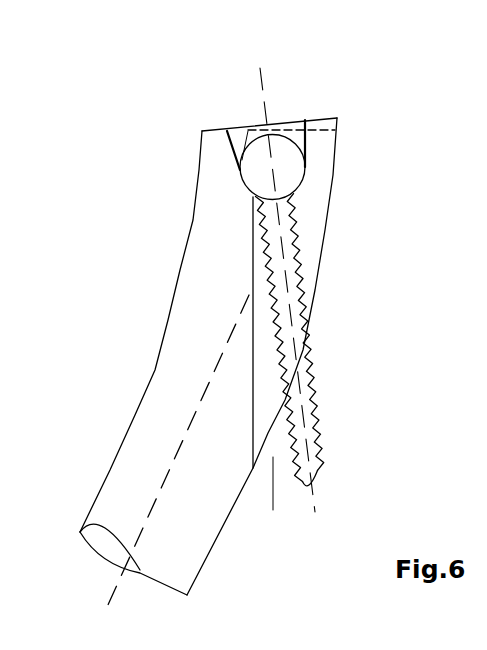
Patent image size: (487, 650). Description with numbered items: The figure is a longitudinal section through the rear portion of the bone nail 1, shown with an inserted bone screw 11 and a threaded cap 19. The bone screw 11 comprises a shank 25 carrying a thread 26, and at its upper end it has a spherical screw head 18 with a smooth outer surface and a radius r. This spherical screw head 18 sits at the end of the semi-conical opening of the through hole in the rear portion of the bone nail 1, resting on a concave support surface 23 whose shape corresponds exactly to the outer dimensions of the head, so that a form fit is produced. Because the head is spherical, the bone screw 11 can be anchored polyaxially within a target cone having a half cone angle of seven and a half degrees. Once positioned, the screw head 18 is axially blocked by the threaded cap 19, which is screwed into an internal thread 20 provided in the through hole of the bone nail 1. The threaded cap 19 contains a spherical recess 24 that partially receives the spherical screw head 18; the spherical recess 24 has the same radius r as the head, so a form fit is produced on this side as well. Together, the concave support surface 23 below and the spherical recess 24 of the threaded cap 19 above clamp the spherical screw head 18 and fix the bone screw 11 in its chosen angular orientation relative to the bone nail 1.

The bone nail 1 is at (147, 290).
The bone screw 11 is at (334, 290).
The spherical screw head 18 is at (301, 161).
The threaded cap 19 is at (294, 119).
The internal thread 20 is at (219, 150).
The concave support surface 23 is at (310, 196).
The spherical recess 24 is at (237, 125).
The shank 25 is at (304, 346).
The thread 26 is at (325, 410).